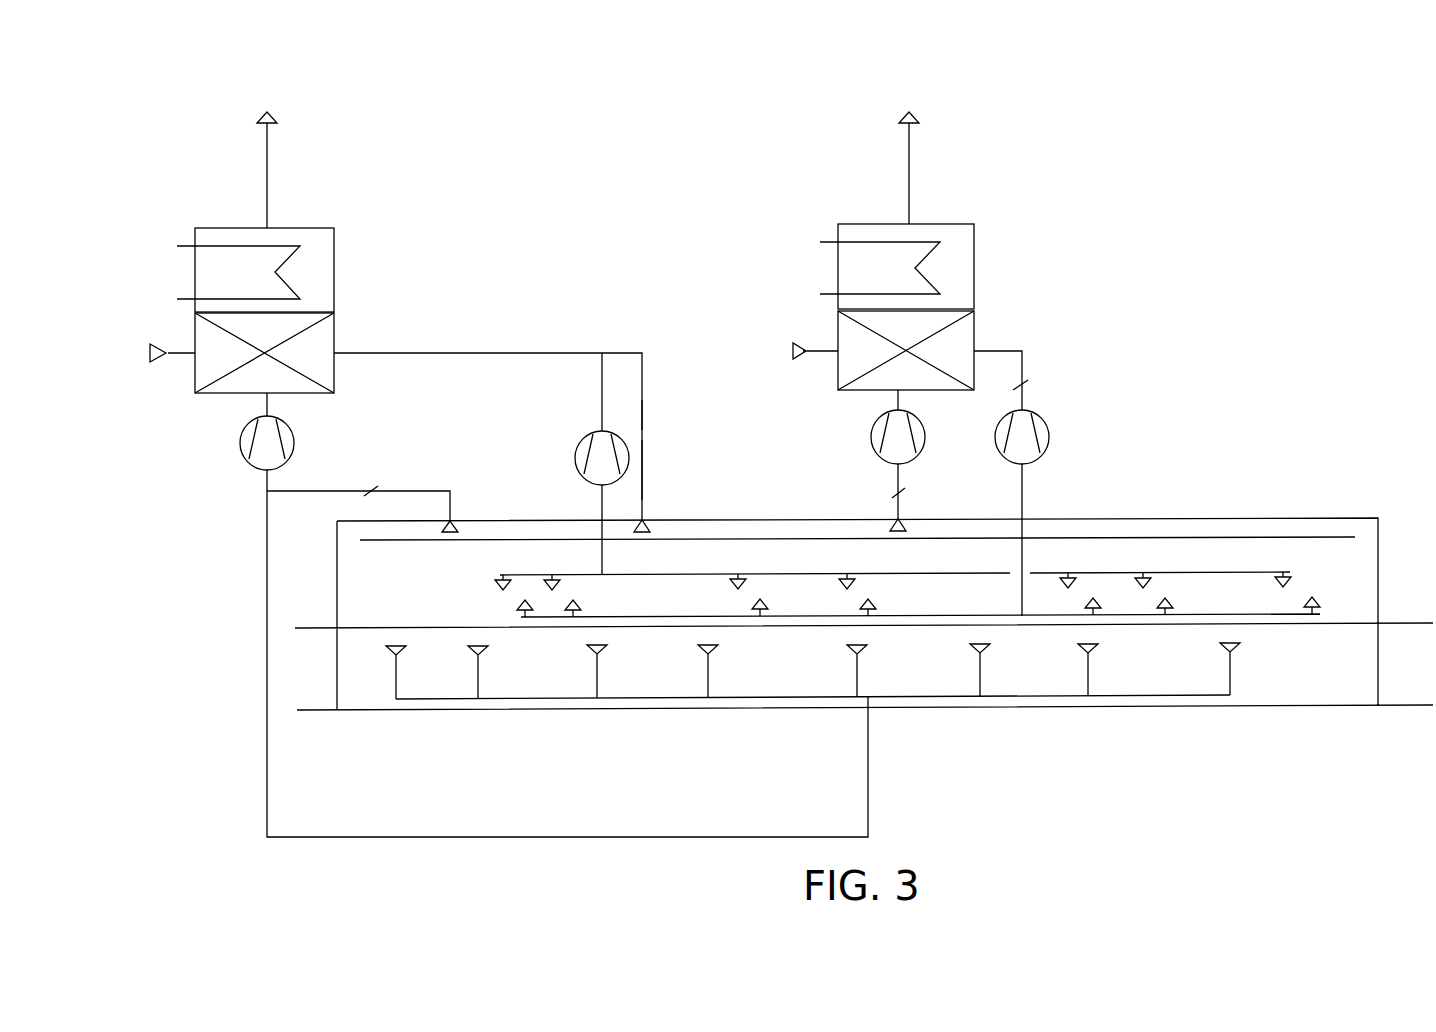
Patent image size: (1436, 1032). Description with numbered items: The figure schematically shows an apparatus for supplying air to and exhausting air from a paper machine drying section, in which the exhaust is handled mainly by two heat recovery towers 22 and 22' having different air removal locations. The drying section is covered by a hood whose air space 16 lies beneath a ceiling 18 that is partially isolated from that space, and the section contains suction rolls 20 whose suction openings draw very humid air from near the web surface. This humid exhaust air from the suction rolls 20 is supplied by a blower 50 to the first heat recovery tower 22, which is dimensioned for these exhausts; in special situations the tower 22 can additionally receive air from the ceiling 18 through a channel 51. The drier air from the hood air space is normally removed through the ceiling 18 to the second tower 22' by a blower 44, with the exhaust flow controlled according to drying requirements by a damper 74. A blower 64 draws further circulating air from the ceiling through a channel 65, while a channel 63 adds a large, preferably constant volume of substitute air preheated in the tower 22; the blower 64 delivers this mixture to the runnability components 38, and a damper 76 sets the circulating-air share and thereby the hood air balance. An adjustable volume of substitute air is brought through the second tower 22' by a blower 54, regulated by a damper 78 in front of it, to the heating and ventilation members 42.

The first heat recovery tower 22 is at (314, 252).
The second heat recovery tower 22' is at (972, 251).
The blower 50 is at (260, 447).
The channel 51 is at (318, 490).
The channel 63 is at (487, 352).
The blower 64 is at (598, 447).
The damper 76 is at (640, 416).
The channel 65 is at (646, 480).
The blower 44 is at (893, 447).
The damper 74 is at (898, 493).
The damper 78 is at (1020, 385).
The blower 54 is at (1030, 432).
The air space 16 is at (441, 601).
The ceiling 18 is at (1177, 525).
The runnability components 38 is at (1292, 585).
The heating and ventilation members 42 is at (1320, 606).
The suction rolls 20 is at (985, 652).